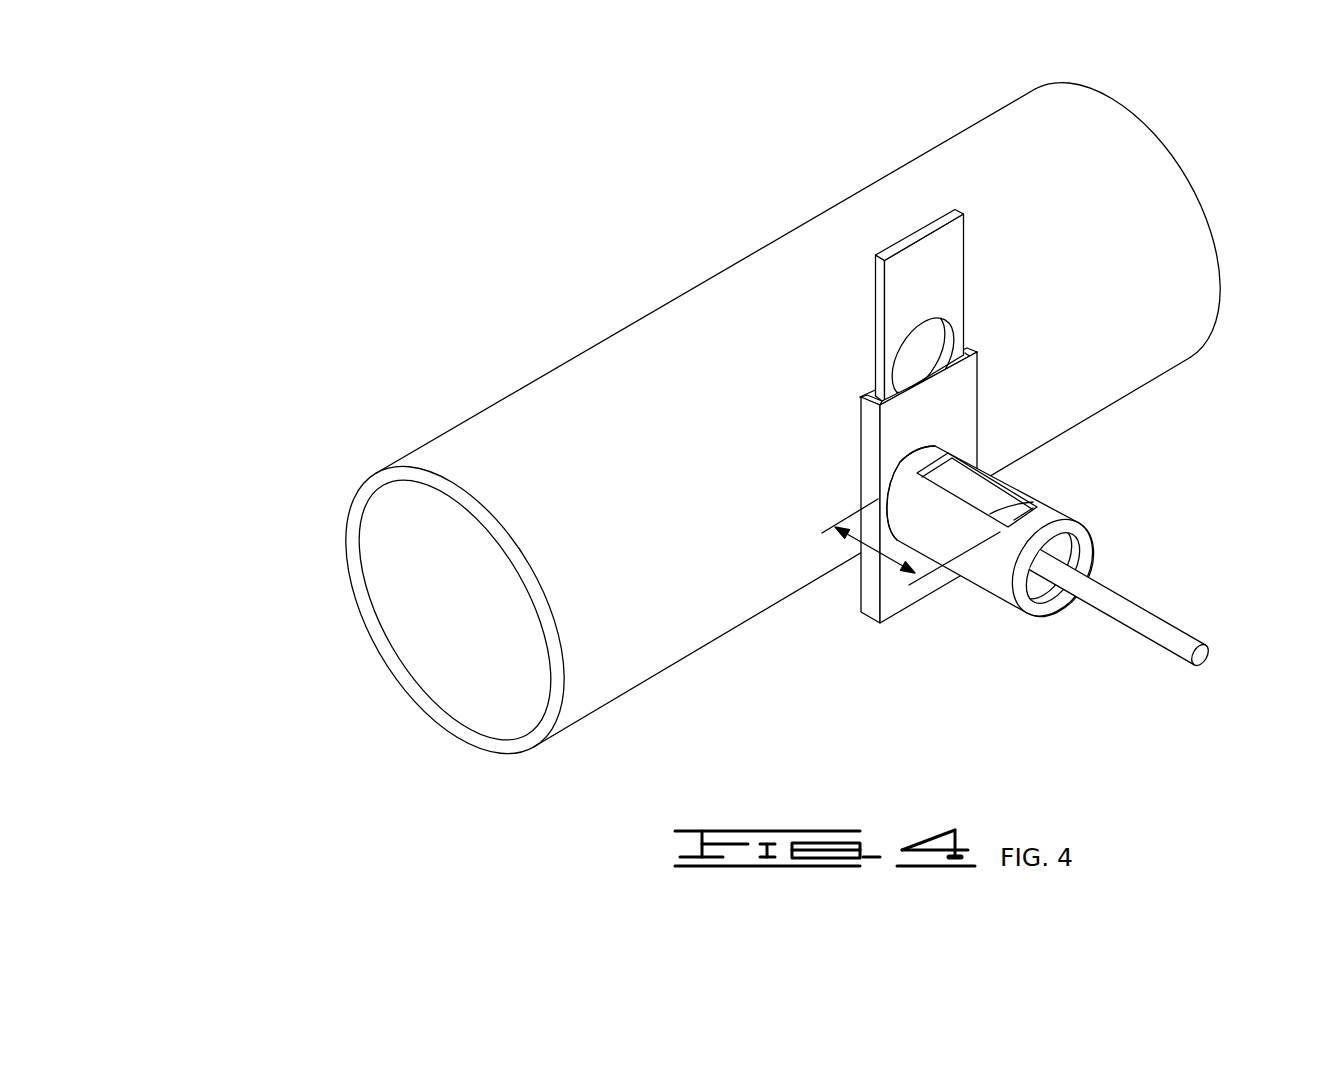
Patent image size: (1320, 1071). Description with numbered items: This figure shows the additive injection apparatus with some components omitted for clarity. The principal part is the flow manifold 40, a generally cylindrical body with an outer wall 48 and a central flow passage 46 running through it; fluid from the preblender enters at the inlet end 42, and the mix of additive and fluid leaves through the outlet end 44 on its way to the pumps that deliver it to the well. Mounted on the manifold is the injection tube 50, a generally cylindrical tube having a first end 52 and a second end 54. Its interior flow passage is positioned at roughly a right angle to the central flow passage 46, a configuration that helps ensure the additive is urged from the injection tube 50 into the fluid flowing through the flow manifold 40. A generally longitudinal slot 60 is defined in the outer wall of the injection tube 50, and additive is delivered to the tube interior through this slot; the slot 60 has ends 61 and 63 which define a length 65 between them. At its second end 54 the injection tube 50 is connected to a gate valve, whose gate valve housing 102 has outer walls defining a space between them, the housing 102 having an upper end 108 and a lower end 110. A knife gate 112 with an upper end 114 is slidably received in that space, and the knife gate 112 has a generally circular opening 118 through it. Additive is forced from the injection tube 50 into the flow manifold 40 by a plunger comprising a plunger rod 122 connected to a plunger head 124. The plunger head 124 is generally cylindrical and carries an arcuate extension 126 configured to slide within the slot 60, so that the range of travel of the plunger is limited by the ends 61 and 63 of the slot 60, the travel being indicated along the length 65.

The flow manifold 40 is at (842, 386).
The inlet end 42 is at (363, 623).
The outlet end 44 is at (1212, 223).
The central flow passage 46 is at (463, 683).
The outer wall 48 is at (353, 500).
The injection tube 50 is at (964, 534).
The first end 52 is at (1070, 523).
The second end 54 is at (903, 470).
The slot 60 is at (961, 458).
The slot end 61 is at (1027, 498).
The slot end 63 is at (930, 457).
The length 65 is at (877, 551).
The gate valve housing 102 is at (868, 533).
The upper end 108 is at (858, 274).
The lower end 110 is at (933, 593).
The knife gate 112 is at (800, 274).
The upper end 114 is at (930, 222).
The opening 118 is at (900, 348).
The plunger rod 122 is at (1172, 598).
The plunger head 124 is at (1055, 547).
The arcuate extension 126 is at (1015, 507).